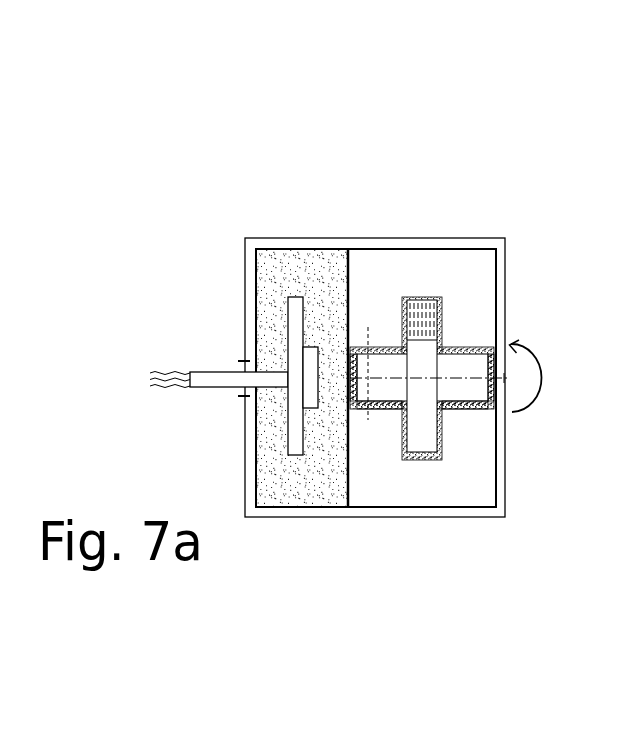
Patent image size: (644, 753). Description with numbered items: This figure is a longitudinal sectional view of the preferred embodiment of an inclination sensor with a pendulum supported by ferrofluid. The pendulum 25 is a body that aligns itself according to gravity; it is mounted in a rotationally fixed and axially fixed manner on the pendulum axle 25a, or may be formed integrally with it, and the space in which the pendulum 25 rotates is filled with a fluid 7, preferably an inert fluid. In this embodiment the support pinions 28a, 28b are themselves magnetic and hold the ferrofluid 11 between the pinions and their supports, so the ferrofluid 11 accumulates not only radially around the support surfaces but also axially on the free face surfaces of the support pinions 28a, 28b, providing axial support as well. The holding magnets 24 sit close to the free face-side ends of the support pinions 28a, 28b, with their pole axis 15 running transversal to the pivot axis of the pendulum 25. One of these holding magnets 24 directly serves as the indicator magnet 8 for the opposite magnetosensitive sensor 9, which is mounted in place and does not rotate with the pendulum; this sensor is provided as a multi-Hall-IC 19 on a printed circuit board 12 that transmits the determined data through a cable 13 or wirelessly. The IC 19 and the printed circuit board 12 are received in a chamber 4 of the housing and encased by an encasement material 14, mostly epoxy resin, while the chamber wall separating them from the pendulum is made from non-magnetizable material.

The chamber 4 is at (494, 345).
The fluid 7 is at (405, 269).
The indicator magnet 8 is at (350, 346).
The magnetosensitive sensor 9 is at (282, 512).
The multi-Hall-IC 19 is at (313, 405).
The ferrofluid 11 is at (475, 347).
The printed circuit board 12 is at (292, 456).
The cable 13 is at (225, 387).
The encasement material 14 is at (323, 268).
The pole axis 15 is at (378, 405).
The holding magnets 24 is at (476, 408).
The pendulum 25 is at (422, 352).
The pendulum axle 25a is at (404, 340).
The support pinion 28a is at (390, 363).
The support pinion 28b is at (456, 348).